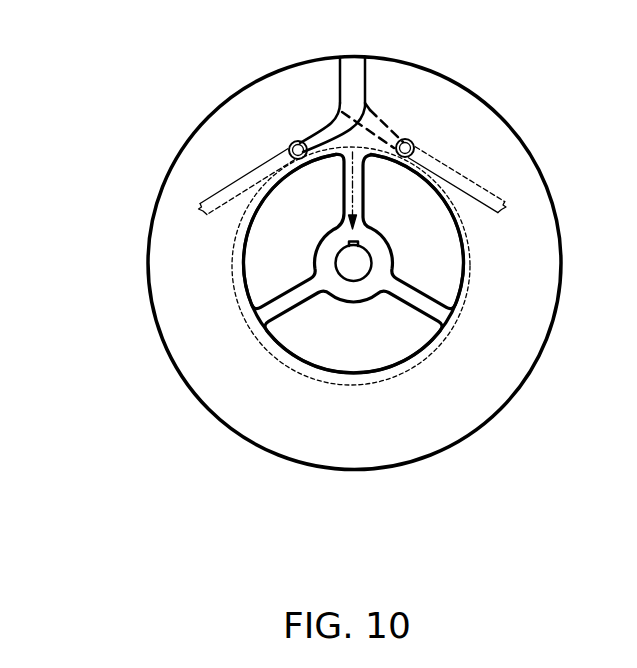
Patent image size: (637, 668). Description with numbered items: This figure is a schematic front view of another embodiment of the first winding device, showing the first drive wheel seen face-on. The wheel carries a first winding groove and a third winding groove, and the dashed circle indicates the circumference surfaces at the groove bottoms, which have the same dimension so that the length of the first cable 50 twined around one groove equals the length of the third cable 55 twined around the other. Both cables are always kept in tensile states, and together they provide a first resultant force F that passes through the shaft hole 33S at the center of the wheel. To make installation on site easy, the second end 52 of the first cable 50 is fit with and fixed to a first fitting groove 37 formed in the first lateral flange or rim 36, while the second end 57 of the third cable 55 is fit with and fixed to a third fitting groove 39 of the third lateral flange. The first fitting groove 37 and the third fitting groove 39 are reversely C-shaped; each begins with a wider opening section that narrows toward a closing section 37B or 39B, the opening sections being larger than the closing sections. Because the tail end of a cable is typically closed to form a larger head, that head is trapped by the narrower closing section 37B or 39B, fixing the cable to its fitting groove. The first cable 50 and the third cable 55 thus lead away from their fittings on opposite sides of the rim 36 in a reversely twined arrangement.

The first lateral flange or rim 36 is at (177, 173).
The first fitting groove 37 is at (327, 123).
The third fitting groove 39 is at (374, 122).
The second end of the first cable 52 is at (296, 141).
The second end of the third cable 57 is at (412, 139).
The first cable 50 is at (247, 173).
The third cable 55 is at (462, 178).
The closing section of the first fitting groove 37B is at (303, 163).
The closing section of the third fitting groove 39B is at (403, 160).
The shaft hole 33S is at (355, 277).
The first resultant force F is at (348, 204).